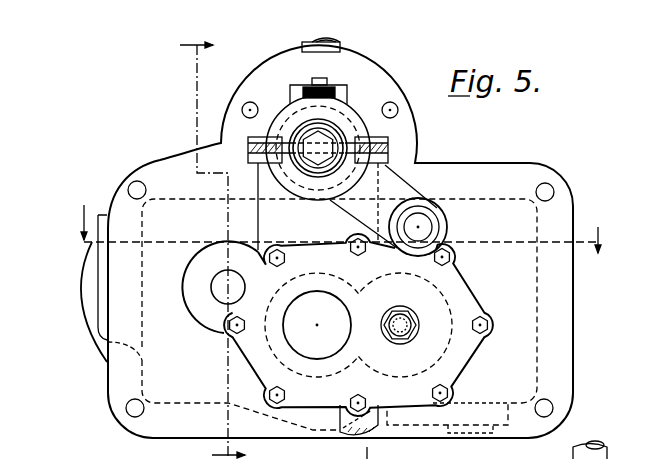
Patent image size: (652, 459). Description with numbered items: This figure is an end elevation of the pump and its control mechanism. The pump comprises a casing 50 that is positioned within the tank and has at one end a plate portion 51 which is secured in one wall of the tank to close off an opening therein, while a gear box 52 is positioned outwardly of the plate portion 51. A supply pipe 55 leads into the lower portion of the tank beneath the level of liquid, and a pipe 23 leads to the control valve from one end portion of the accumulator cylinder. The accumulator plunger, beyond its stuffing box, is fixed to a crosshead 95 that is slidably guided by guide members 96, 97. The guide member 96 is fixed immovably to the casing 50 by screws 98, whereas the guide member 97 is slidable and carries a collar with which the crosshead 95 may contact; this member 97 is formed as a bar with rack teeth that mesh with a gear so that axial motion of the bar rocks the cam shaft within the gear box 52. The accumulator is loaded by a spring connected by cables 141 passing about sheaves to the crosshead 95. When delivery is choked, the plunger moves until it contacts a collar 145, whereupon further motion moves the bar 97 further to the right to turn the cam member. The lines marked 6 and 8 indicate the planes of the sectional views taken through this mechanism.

The section line 6- 6 is at (231, 60).
The section line 8- 8 is at (93, 200).
The pipe 23 is at (340, 47).
The casing 50 is at (457, 303).
The plate portion 51 is at (552, 318).
The gear box 52 is at (510, 192).
The supply pipe 55 is at (344, 426).
The crosshead 95 is at (402, 188).
The guide member 96 is at (313, 92).
The guide member 97 is at (420, 227).
The screws 98 is at (327, 82).
The cables 141 is at (250, 148).
The collar 145 is at (448, 232).